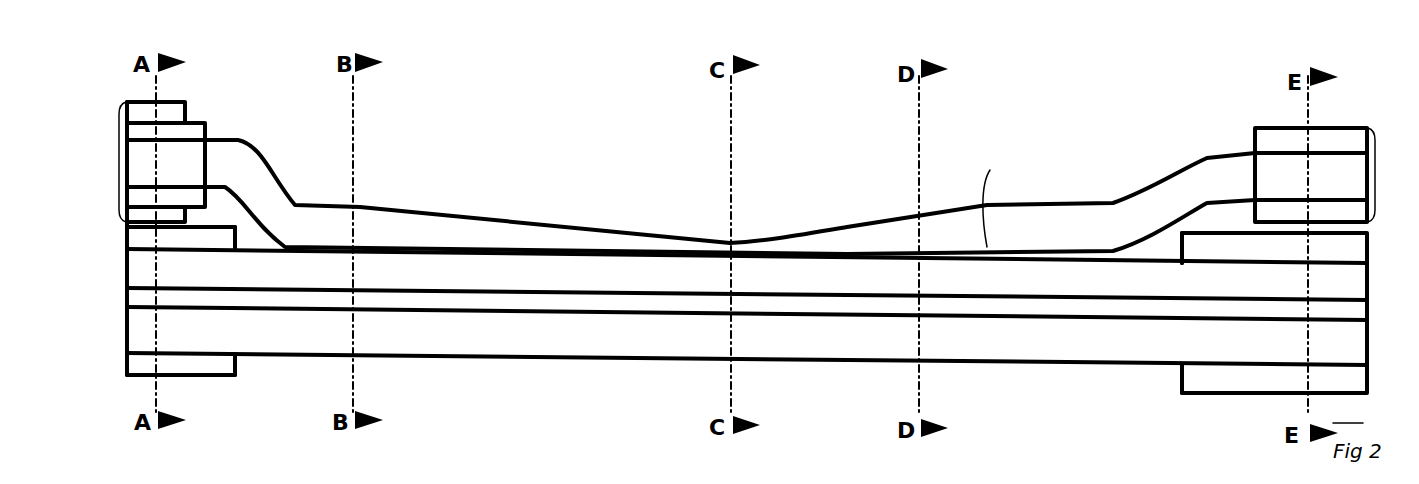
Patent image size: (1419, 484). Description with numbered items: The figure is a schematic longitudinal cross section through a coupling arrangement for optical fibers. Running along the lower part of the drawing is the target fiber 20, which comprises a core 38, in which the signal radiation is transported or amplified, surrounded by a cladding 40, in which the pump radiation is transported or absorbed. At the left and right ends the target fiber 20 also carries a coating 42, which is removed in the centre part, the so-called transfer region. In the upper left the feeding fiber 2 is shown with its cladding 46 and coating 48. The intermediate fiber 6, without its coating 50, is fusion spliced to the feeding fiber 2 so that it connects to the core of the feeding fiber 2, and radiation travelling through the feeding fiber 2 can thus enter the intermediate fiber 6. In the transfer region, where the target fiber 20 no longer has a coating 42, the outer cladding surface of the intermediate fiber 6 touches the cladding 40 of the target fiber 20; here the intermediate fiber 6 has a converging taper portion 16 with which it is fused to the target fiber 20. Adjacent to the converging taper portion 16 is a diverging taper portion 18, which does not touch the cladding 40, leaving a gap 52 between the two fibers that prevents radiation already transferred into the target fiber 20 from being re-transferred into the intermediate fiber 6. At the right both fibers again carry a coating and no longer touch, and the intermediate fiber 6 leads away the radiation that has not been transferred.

The feeding fiber 2 is at (110, 162).
The intermediate fiber 6 is at (262, 190).
The converging taper portion 16 is at (487, 217).
The diverging taper portion 18 is at (830, 230).
The target fiber 20 is at (128, 373).
The core 38 is at (513, 305).
The cladding 40 is at (585, 345).
The coating 42 is at (218, 372).
The cladding 46 is at (192, 133).
The coating 48 is at (170, 115).
The coating 50 is at (1282, 142).
The gap 52 is at (989, 197).